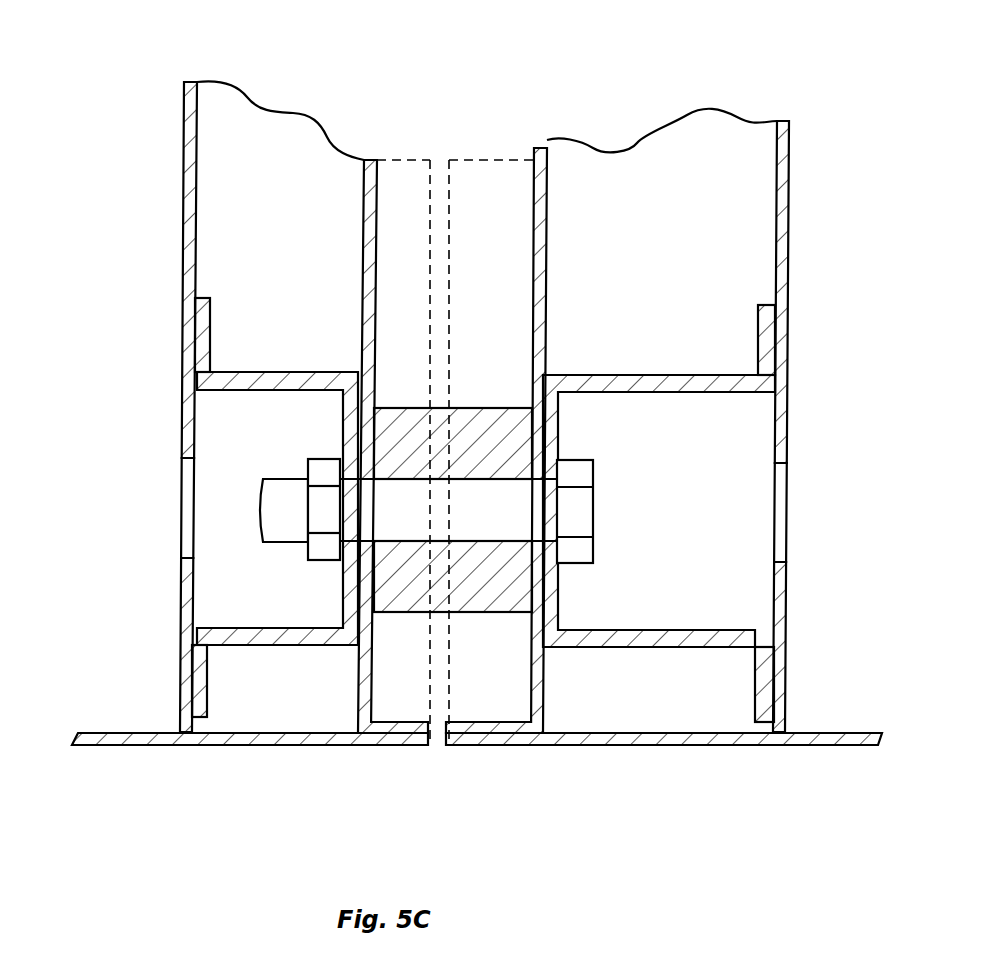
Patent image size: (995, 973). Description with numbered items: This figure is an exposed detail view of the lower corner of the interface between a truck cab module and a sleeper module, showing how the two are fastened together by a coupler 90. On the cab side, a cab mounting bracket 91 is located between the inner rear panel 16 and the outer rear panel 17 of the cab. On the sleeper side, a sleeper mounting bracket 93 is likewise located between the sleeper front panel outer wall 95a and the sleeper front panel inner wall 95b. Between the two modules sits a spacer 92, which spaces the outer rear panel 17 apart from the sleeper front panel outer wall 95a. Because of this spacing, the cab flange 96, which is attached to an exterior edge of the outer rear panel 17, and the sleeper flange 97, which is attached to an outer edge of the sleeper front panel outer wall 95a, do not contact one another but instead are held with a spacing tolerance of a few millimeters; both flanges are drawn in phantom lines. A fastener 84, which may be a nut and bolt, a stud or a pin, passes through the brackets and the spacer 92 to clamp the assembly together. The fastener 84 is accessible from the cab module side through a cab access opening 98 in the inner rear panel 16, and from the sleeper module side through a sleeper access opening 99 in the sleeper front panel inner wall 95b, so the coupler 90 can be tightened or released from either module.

The inner rear panel 16 is at (184, 178).
The outer rear panel 17 is at (366, 160).
The fastener 84 is at (424, 499).
The coupler 90 is at (104, 313).
The cab mounting bracket 91 is at (272, 385).
The spacer 92 is at (488, 607).
The sleeper mounting bracket 93 is at (660, 388).
The sleeper front panel outer wall 95a is at (541, 148).
The sleeper front panel inner wall 95b is at (786, 160).
The cab flange 96 is at (410, 172).
The sleeper flange 97 is at (483, 172).
The cab access opening 98 is at (184, 484).
The sleeper access opening 99 is at (780, 490).